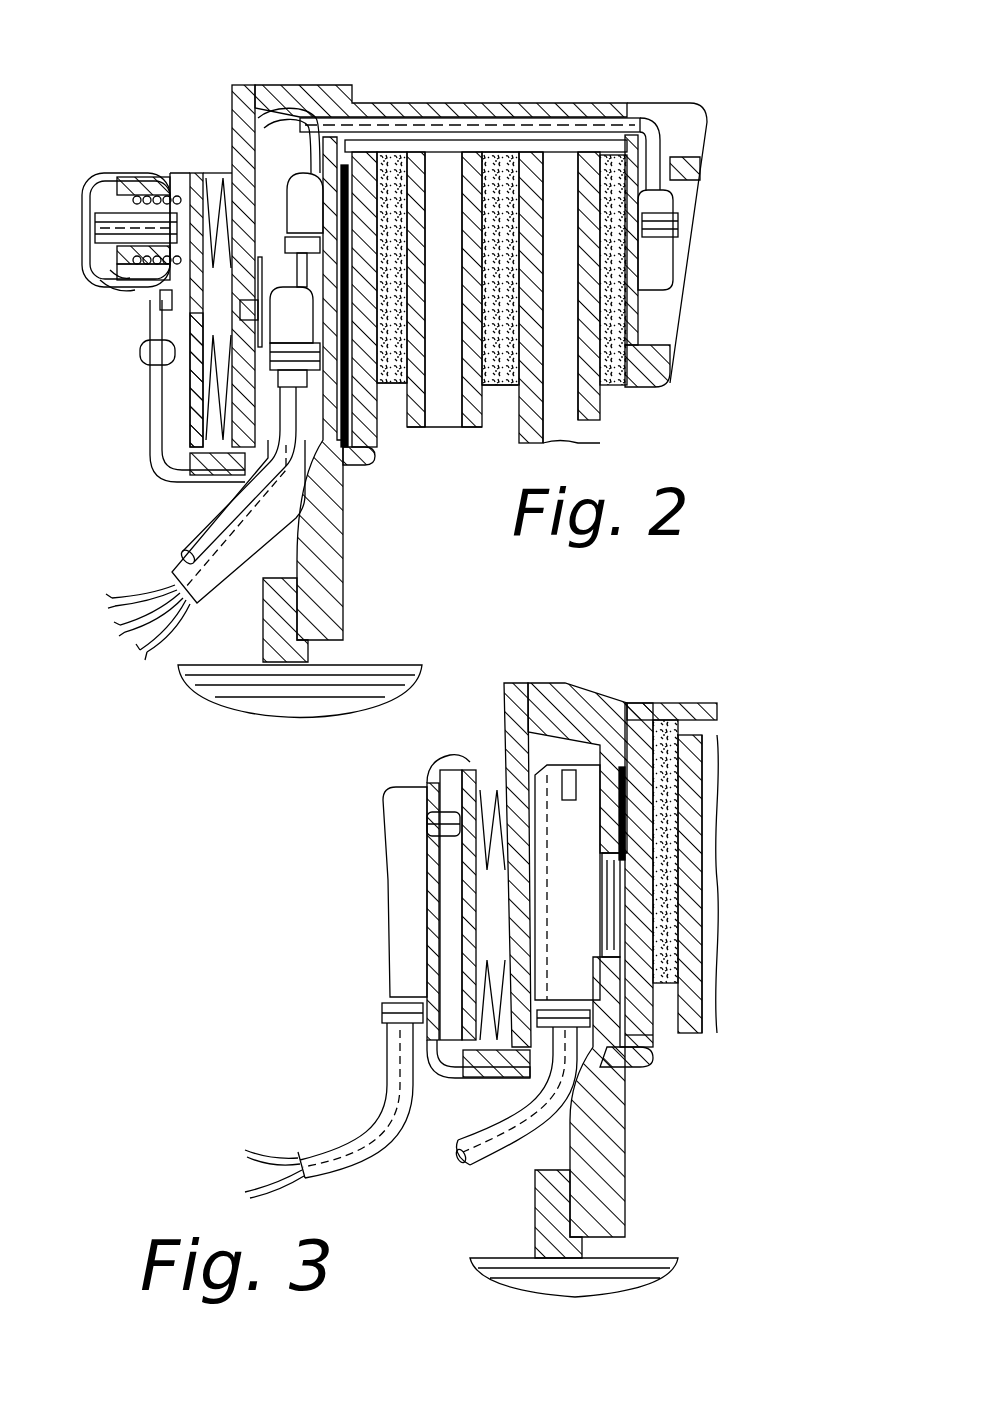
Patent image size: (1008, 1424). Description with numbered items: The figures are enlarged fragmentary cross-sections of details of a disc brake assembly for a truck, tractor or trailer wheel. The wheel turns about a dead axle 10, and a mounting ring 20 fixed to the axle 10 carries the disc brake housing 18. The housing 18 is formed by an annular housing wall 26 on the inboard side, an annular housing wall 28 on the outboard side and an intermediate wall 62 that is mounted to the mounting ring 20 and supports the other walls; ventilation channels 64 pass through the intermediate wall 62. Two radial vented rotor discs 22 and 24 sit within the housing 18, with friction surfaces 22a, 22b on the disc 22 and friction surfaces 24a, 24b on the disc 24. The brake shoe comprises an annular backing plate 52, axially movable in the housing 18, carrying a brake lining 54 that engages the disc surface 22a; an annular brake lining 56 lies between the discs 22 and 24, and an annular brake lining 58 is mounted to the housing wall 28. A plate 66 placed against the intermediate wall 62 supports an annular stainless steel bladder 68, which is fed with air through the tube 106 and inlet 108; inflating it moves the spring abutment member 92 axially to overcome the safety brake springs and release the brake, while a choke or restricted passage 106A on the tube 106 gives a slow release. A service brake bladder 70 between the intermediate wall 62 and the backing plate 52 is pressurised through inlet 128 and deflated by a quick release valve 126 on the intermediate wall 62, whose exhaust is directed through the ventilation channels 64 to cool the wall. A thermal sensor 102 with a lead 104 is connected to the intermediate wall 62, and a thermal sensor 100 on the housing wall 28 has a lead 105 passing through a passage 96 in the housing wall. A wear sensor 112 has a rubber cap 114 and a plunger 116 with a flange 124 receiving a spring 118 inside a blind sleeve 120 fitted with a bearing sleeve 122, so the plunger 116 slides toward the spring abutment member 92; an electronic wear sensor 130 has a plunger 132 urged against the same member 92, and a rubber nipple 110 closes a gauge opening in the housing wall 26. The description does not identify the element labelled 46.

In FIG. 2, the axle 10 is at (280, 718).
In FIG. 2, the housing 18 is at (215, 175).
In FIG. 2, the mounting ring 20 is at (263, 628).
In FIG. 3, the mounting ring 20 is at (535, 1200).
In FIG. 2, the rotor disc 22 is at (471, 430).
In FIG. 3, the rotor disc 22 is at (690, 850).
In FIG. 2, the friction surface 22a is at (392, 152).
In FIG. 3, the friction surface 22a is at (667, 727).
In FIG. 2, the friction surface 22b is at (498, 152).
In FIG. 2, the rotor disc 24 is at (600, 425).
In FIG. 2, the friction surface 24a is at (528, 152).
In FIG. 2, the friction surface 24b is at (612, 155).
In FIG. 2, the annular housing wall 26 is at (155, 470).
In FIG. 2, the annular housing wall 28 is at (675, 368).
In FIG. 2, the glass plate 46 is at (445, 400).
In FIG. 3, the glass plate 46 is at (712, 905).
In FIG. 2, the annular backing plate 52 is at (365, 152).
In FIG. 3, the annular backing plate 52 is at (660, 1012).
In FIG. 2, the brake lining 54 is at (395, 385).
In FIG. 3, the brake lining 54 is at (652, 712).
In FIG. 2, the annular brake lining 56 is at (483, 390).
In FIG. 2, the annular brake lining 58 is at (632, 388).
In FIG. 2, the intermediate wall 62 is at (330, 137).
In FIG. 3, the intermediate wall 62 is at (606, 690).
In FIG. 3, the ventilation channels 64 is at (475, 895).
In FIG. 2, the plate 66 is at (250, 92).
In FIG. 3, the plate 66 is at (518, 690).
In FIG. 2, the bladder 68 is at (218, 180).
In FIG. 3, the bladder 68 is at (490, 790).
In FIG. 2, the bladder 70 is at (360, 466).
In FIG. 3, the bladder 70 is at (655, 1062).
In FIG. 2, the spring abutment member 92 is at (190, 375).
In FIG. 3, the spring abutment member 92 is at (470, 930).
In FIG. 2, the passage 96 is at (450, 118).
In FIG. 2, the thermal sensor 100 is at (675, 262).
In FIG. 2, the thermal sensor 102 is at (313, 180).
In FIG. 2, the lead 104 is at (313, 300).
In FIG. 2, the lead 105 is at (665, 205).
In FIG. 2, the tube 106 is at (185, 552).
In FIG. 2, the choke 106A is at (243, 490).
In FIG. 2, the inlet 108 is at (240, 310).
In FIG. 2, the rubber nipple 110 is at (142, 352).
In FIG. 2, the wear sensor 112 is at (101, 201).
In FIG. 2, the rubber cap 114 is at (100, 178).
In FIG. 2, the plunger 116 is at (95, 233).
In FIG. 2, the spring 118 is at (148, 192).
In FIG. 2, the blind sleeve 120 is at (117, 270).
In FIG. 2, the bearing sleeve 122 is at (120, 285).
In FIG. 2, the flange 124 is at (165, 300).
In FIG. 3, the quick release valve 126 is at (592, 909).
In FIG. 3, the inlet 128 is at (610, 895).
In FIG. 3, the wear sensor 130 is at (383, 835).
In FIG. 3, the plunger 132 is at (425, 790).